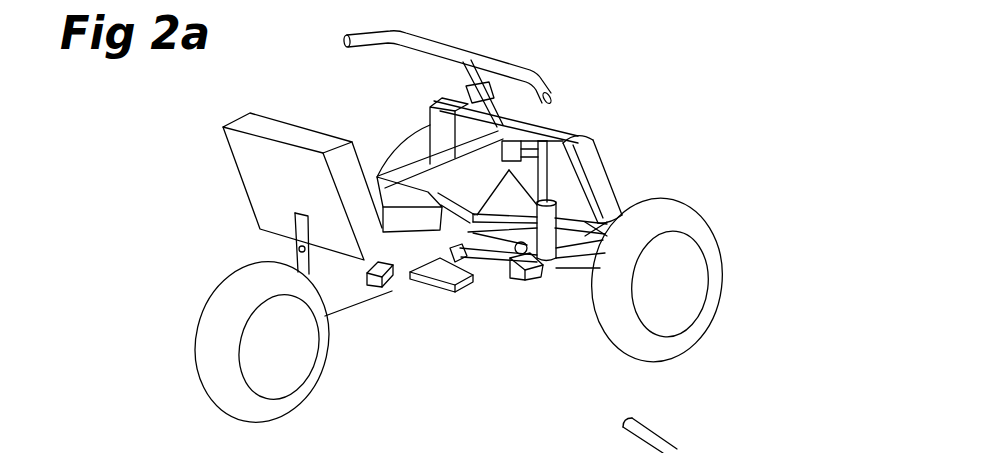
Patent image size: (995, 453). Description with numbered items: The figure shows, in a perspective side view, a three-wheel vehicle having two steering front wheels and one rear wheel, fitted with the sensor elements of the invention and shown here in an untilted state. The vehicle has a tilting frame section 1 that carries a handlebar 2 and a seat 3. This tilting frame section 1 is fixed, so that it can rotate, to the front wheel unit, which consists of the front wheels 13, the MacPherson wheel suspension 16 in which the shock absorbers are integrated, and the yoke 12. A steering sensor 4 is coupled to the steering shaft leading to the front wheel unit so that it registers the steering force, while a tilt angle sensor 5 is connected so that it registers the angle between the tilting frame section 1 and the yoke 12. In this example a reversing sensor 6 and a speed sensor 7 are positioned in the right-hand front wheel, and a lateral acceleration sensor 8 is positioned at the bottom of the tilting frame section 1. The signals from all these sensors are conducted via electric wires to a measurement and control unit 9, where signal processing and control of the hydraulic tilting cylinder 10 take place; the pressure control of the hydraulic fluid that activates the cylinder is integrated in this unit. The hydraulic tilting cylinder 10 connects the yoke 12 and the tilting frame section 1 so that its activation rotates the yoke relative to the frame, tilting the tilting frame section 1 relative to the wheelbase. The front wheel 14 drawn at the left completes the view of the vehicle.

The tilting frame section 1 is at (343, 295).
The handlebar 2 is at (507, 67).
The seat 3 is at (287, 193).
The steering sensor 4 is at (428, 128).
The tilt angle sensor 5 is at (578, 133).
The reversing sensor 6 is at (675, 285).
The speed sensor 7 is at (675, 285).
The lateral acceleration sensor 8 is at (482, 278).
The measurement and control unit 9 is at (380, 283).
The hydraulic tilting cylinder 10 is at (560, 272).
The yoke 12 is at (577, 133).
The front wheels 13 is at (427, 293).
The front wheel 14 is at (252, 370).
The MacPherson wheel suspension 16 is at (438, 128).